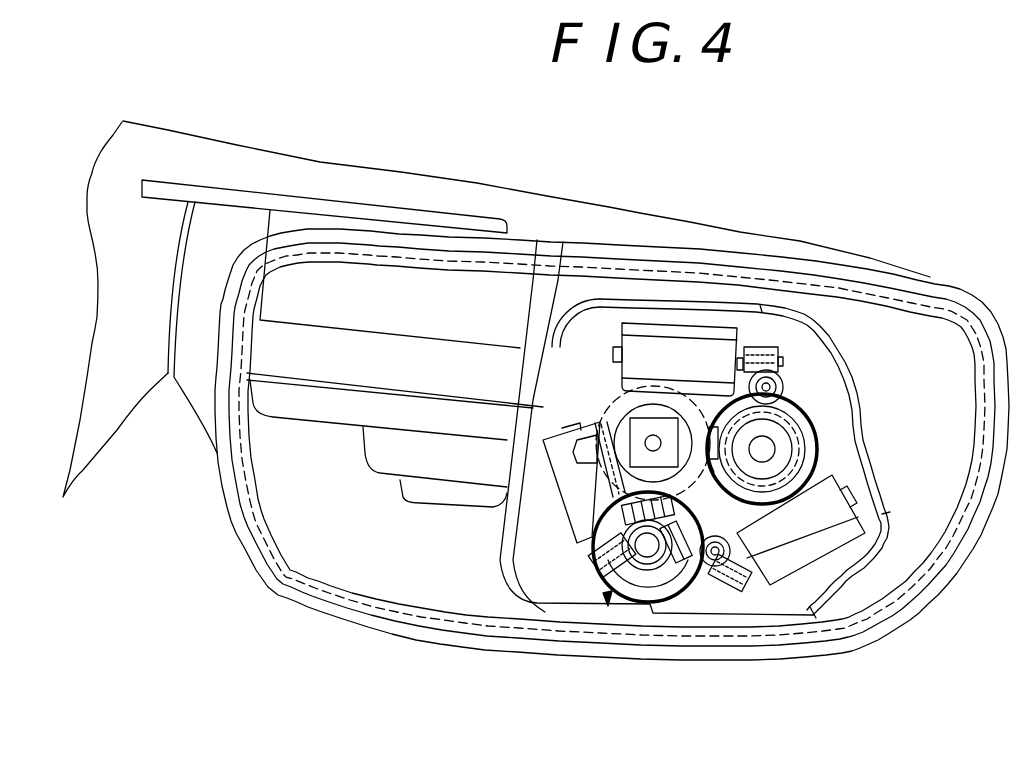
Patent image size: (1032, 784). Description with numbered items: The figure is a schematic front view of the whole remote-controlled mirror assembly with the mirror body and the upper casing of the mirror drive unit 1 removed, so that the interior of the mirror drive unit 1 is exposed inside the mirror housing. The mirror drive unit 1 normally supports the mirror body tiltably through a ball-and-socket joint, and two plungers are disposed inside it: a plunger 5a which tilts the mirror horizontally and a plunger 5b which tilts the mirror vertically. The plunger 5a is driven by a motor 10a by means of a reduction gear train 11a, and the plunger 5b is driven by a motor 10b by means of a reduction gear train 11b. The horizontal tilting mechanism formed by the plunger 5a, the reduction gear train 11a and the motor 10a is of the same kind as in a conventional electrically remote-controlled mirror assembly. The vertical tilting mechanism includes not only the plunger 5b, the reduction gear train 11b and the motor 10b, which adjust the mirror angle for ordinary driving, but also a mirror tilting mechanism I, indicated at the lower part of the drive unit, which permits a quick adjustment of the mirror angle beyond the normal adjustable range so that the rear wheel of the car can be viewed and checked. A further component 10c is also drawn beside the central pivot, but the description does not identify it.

The mirror drive unit 1 is at (795, 308).
The plunger 5a is at (777, 447).
The plunger 5b is at (660, 555).
The motor 10a is at (665, 325).
The motor 10b is at (835, 548).
The side actuator unit 10c is at (627, 497).
The reduction gear train 11a is at (780, 385).
The reduction gear train 11b is at (740, 587).
The mirror tilting mechanism I is at (607, 597).